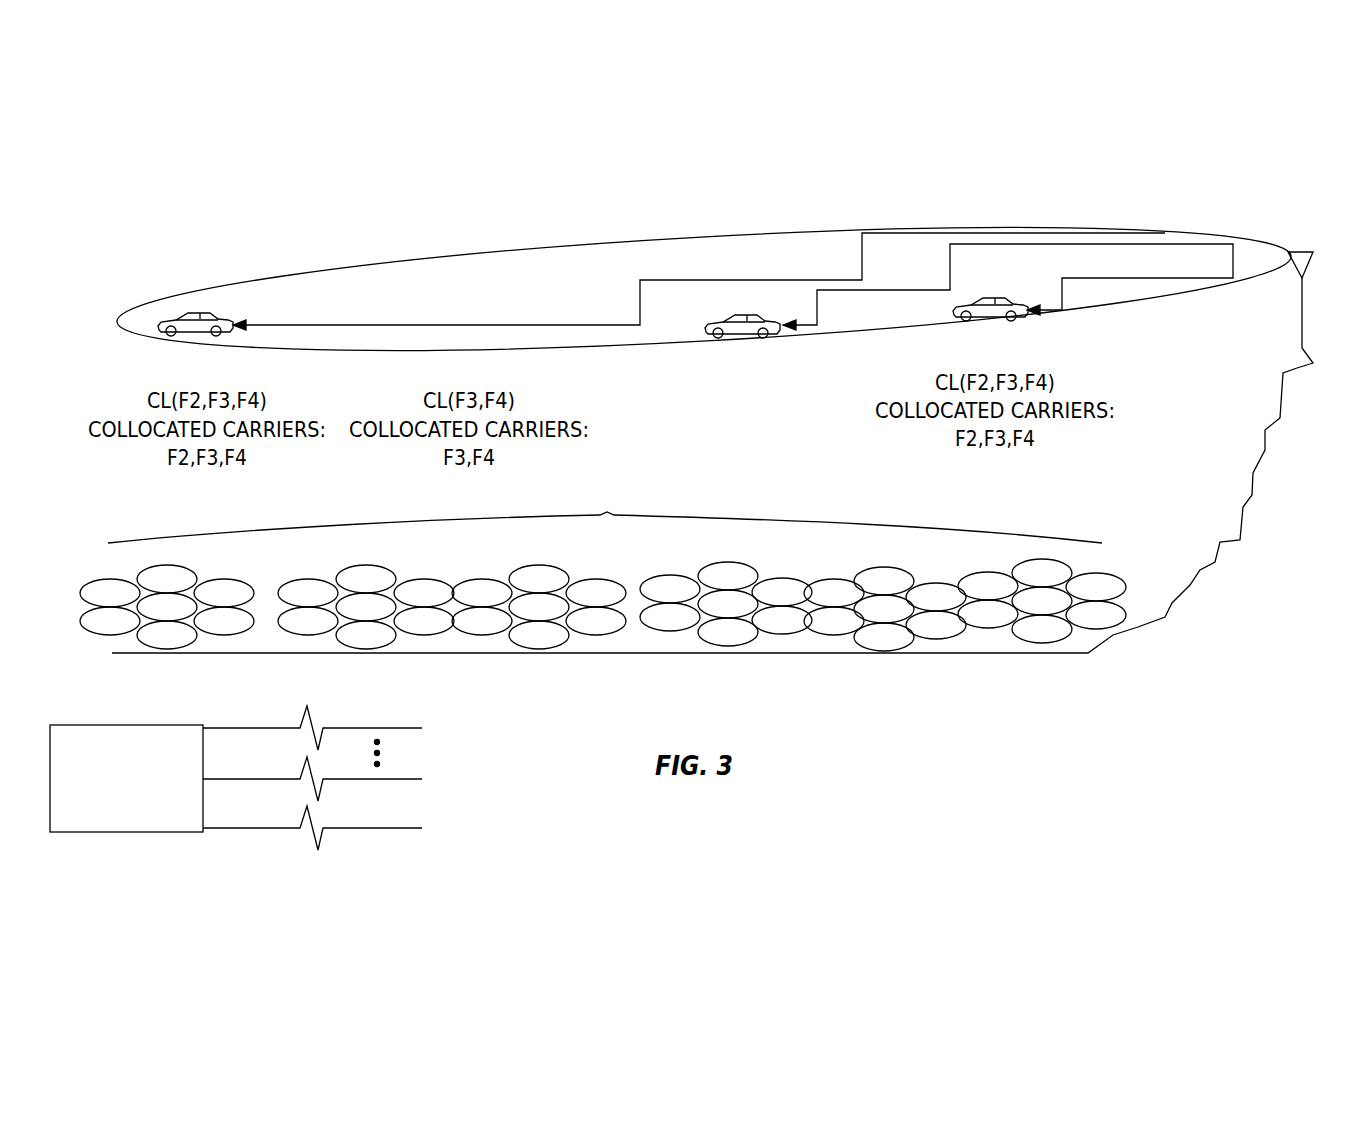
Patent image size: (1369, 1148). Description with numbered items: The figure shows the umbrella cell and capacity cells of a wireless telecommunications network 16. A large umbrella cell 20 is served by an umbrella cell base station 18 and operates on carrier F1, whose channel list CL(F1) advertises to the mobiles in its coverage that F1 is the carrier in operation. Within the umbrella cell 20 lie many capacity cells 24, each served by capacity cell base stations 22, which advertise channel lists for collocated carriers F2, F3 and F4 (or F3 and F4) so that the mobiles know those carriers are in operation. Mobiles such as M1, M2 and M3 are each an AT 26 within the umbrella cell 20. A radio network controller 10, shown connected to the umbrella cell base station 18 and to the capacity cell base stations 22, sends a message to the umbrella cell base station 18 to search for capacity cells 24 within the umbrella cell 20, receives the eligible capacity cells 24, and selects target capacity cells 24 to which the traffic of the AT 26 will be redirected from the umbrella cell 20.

The radio network controller 10 is at (113, 809).
The wireless telecommunications network 16 is at (330, 238).
The umbrella cell base station 18 is at (1292, 252).
The umbrella cell 20 is at (825, 233).
The capacity cell base stations 22 is at (100, 582).
The capacity cells 24 is at (612, 472).
The AT 26 is at (235, 322).